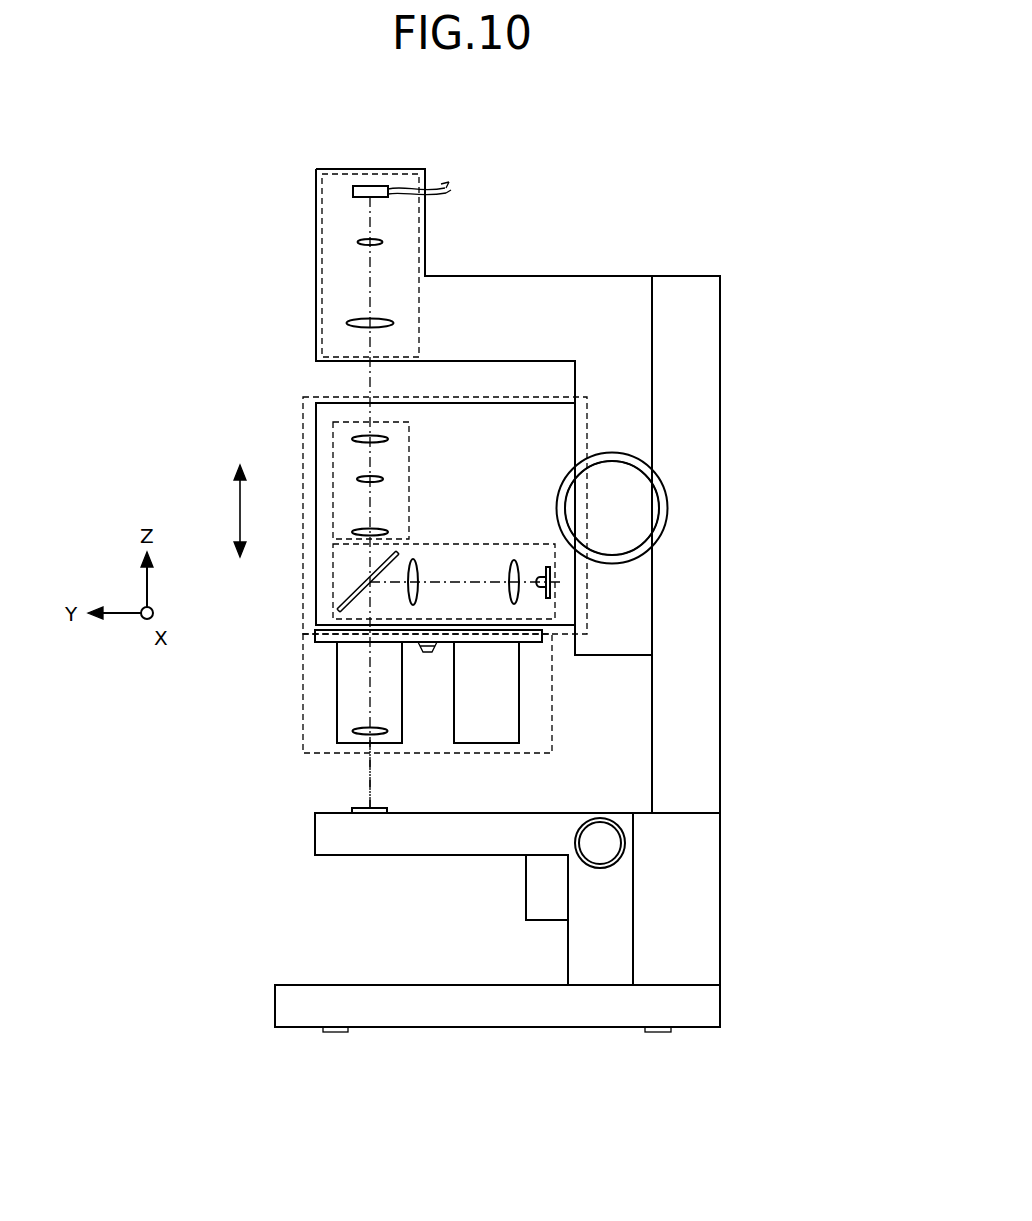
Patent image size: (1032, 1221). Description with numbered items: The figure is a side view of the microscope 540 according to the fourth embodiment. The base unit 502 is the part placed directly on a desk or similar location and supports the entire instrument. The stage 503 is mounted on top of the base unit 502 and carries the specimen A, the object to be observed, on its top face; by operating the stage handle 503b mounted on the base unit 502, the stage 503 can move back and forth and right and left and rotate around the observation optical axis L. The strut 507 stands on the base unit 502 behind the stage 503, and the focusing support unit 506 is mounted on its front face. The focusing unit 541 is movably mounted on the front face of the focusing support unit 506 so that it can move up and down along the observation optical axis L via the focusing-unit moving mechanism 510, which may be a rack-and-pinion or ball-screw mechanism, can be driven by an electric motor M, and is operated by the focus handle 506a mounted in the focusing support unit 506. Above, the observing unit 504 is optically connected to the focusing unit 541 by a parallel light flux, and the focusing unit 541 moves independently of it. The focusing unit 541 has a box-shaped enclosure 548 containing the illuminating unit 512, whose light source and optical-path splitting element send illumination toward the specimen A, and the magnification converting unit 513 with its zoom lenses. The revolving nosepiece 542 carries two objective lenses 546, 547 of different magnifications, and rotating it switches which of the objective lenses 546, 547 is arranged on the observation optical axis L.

The microscope 540 is at (690, 208).
The focusing support unit 506 is at (565, 262).
The observing unit 504 is at (313, 200).
The focusing-unit moving mechanism 510 is at (580, 441).
The focus handle 506a is at (632, 507).
The strut 507 is at (700, 523).
The electric motor M is at (630, 522).
The focusing unit 541 is at (303, 413).
The enclosure 548 is at (316, 465).
The magnification converting unit 513 is at (333, 508).
The illuminating unit 512 is at (333, 600).
The revolving nosepiece 542 is at (296, 638).
The objective lens 546 is at (345, 717).
The objective lens 547 is at (490, 728).
The observation optical axis L is at (365, 778).
The specimen A is at (377, 810).
The stage 503 is at (345, 835).
The stage handle 503b is at (608, 843).
The base unit 502 is at (548, 1015).